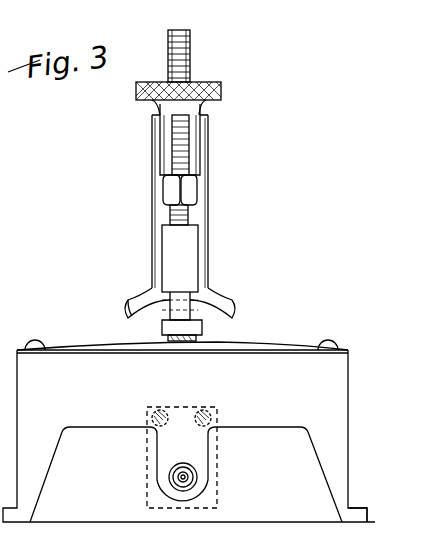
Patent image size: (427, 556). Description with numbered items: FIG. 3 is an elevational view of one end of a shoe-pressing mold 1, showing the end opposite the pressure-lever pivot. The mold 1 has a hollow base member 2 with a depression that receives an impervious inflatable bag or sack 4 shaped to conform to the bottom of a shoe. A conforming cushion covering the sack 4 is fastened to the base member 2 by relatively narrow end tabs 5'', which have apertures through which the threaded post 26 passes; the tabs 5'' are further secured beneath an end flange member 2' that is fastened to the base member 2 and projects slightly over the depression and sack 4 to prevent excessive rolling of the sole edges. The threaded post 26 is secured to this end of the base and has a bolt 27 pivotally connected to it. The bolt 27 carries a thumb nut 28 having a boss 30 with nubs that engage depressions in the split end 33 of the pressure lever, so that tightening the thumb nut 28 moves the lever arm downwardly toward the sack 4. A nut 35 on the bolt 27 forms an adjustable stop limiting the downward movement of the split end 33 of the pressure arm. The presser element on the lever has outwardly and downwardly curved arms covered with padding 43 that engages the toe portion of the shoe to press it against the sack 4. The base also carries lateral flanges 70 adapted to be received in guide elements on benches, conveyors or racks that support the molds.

The mold 1 is at (64, 240).
The hollow base member 2 is at (189, 436).
The end flange member 2' is at (352, 340).
The inflatable bag or sack 4 is at (0, 318).
The end tab 5'' is at (182, 339).
The threaded post 26 is at (168, 339).
The bolt 27 is at (187, 216).
The thumb nut 28 is at (222, 95).
The boss 30 is at (157, 106).
The split end 33 is at (204, 160).
The nut 35 is at (171, 190).
The padding 43 is at (148, 306).
The lateral flange 70 is at (360, 508).